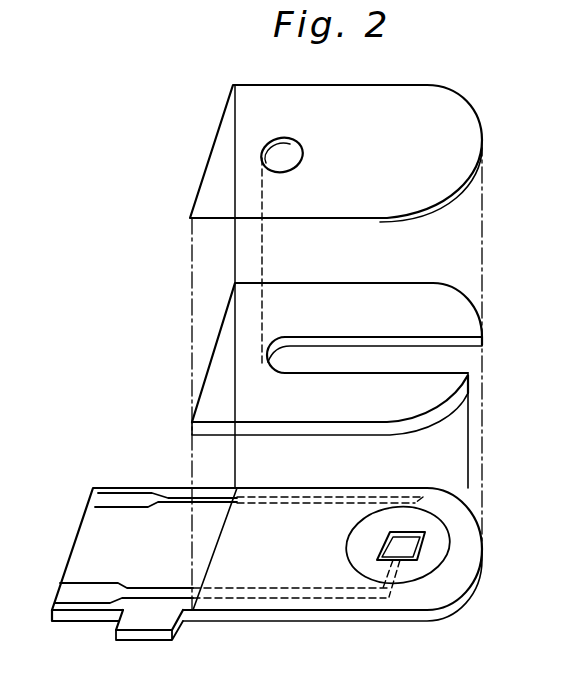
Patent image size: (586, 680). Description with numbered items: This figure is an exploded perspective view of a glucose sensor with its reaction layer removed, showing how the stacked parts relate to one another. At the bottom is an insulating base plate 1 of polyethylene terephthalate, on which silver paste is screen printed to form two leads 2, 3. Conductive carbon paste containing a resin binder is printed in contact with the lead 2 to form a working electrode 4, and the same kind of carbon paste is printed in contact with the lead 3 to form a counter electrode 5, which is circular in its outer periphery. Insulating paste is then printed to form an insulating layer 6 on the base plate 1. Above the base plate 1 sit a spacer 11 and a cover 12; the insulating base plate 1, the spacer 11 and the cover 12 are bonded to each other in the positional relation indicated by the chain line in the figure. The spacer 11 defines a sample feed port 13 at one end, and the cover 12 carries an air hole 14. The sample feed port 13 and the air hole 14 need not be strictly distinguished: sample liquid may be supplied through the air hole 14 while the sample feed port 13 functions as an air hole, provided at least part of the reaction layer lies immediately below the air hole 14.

The insulating base plate 1 is at (137, 548).
The lead 2 is at (83, 598).
The lead 3 is at (102, 500).
The working electrode 4 is at (403, 547).
The counter electrode 5 is at (410, 520).
The insulating layer 6 is at (296, 567).
The spacer 11 is at (230, 354).
The cover 12 is at (228, 172).
The sample feed port 13 is at (472, 366).
The air hole 14 is at (278, 157).